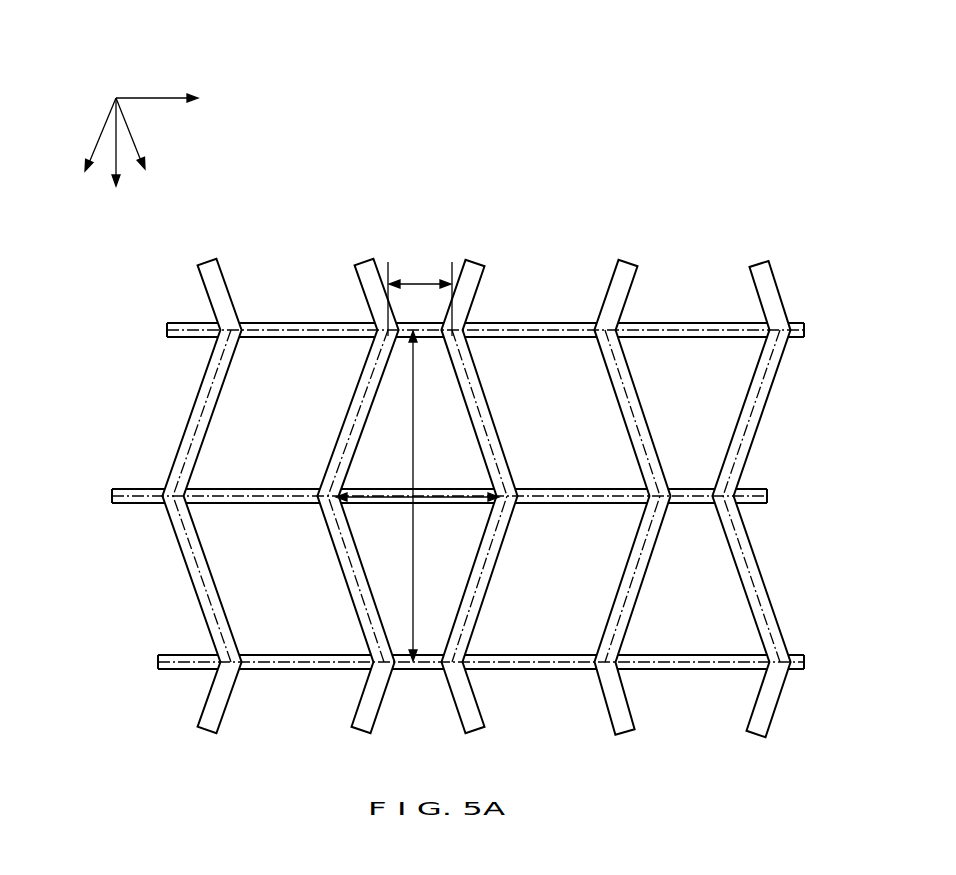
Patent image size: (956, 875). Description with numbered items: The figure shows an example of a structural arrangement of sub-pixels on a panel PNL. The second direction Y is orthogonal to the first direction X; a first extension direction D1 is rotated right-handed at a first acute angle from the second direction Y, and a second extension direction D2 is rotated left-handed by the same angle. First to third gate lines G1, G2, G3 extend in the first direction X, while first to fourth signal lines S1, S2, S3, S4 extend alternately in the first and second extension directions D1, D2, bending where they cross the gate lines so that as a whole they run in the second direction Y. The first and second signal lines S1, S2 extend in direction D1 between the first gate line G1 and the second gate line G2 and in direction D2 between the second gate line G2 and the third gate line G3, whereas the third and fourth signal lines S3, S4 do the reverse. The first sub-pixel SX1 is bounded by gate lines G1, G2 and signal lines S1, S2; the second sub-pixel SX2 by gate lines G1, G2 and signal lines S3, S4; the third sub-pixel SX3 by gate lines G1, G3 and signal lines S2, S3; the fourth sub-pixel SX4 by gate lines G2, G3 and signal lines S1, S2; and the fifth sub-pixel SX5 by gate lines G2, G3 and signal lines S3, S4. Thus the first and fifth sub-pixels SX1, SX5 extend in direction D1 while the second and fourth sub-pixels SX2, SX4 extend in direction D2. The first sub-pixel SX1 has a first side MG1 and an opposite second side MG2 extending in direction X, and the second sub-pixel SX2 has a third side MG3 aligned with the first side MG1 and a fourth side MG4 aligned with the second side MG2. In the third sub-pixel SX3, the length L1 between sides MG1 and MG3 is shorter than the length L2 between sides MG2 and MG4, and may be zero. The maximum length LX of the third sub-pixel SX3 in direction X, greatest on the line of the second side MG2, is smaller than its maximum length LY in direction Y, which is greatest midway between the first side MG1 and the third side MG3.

The first gate line G1 is at (167, 330).
The second gate line G2 is at (112, 496).
The third gate line G3 is at (158, 662).
The first signal line S1 is at (210, 260).
The second signal line S2 is at (366, 260).
The third signal line S3 is at (476, 260).
The fourth signal line S4 is at (629, 261).
The first sub-pixel SX1 is at (280, 413).
The second sub-pixel SX2 is at (556, 413).
The third sub-pixel SX3 is at (417, 496).
The fourth sub-pixel SX4 is at (278, 579).
The fifth sub-pixel SX5 is at (556, 579).
The first side MG1 is at (292, 320).
The second side MG2 is at (215, 510).
The third side MG3 is at (571, 318).
The fourth side MG4 is at (612, 510).
The display panel PNL is at (601, 185).
The length between the first side and the third side L1 is at (418, 284).
The length between the second side and the fourth side L2 is at (443, 492).
The length of the third sub-pixel in the first direction X LX is at (454, 453).
The length of the third sub-pixel in the second direction Y LY is at (412, 460).
The first direction X is at (166, 100).
The second direction Y is at (115, 157).
The first extension direction D1 is at (88, 144).
The second extension direction D2 is at (144, 144).